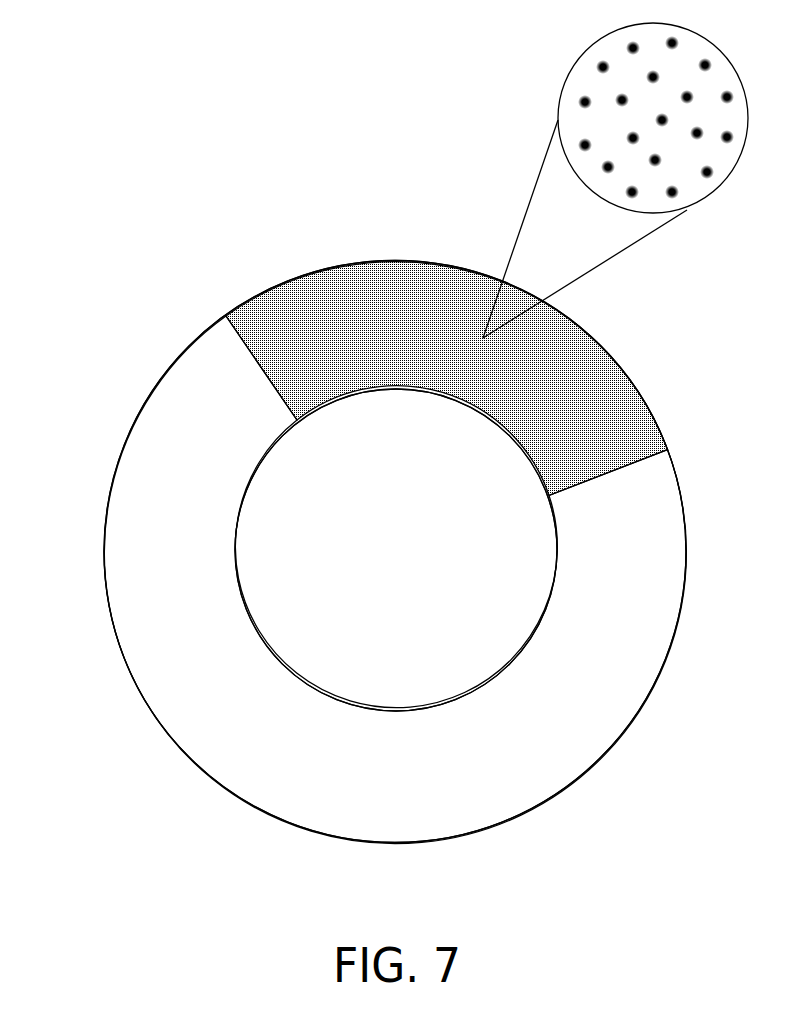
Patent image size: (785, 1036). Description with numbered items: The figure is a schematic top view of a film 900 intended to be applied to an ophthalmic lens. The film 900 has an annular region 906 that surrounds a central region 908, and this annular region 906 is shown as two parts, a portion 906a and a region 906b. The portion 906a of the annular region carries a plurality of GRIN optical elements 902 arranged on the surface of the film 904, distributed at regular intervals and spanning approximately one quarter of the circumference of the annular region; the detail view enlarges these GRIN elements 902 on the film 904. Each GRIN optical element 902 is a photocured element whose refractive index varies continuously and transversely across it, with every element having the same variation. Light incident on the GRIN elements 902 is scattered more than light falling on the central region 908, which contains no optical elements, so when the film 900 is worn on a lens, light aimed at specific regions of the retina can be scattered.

The film 900 is at (245, 278).
The GRIN optical elements 902 is at (575, 105).
The film surface 904 is at (590, 77).
The annular region 906 is at (312, 275).
The portion of the annular region 906a is at (378, 285).
The region of the annular region 906b is at (143, 458).
The central region 908 is at (282, 495).